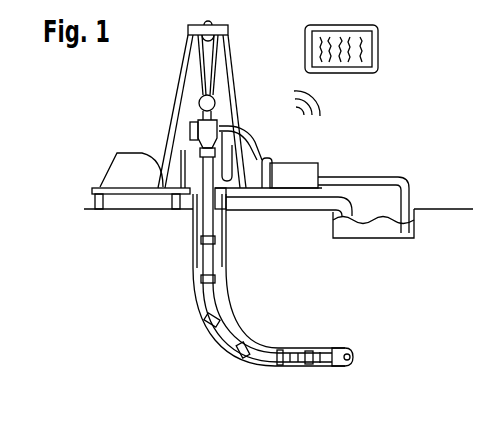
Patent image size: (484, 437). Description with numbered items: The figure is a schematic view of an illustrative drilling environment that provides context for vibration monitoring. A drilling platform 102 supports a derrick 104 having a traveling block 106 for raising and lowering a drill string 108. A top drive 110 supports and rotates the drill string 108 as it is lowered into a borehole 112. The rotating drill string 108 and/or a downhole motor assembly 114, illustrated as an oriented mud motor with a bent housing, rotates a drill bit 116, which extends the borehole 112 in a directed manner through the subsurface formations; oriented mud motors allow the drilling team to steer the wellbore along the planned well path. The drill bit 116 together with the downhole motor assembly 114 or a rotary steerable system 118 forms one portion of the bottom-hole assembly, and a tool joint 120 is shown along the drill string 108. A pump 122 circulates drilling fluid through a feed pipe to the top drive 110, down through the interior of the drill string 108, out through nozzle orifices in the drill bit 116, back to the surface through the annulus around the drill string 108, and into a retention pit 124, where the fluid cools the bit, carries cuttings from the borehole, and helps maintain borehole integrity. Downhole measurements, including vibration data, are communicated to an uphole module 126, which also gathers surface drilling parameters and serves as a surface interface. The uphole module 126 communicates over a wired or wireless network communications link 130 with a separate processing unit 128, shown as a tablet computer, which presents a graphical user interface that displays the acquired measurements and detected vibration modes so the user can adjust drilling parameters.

The drilling platform 102 is at (91, 194).
The derrick 104 is at (187, 47).
The traveling block 106 is at (199, 101).
The drill string 108 is at (206, 272).
The top drive 110 is at (200, 124).
The borehole 112 is at (197, 304).
The downhole motor assembly 114 is at (286, 361).
The drill bit 116 is at (345, 349).
The rotary steerable system 118 is at (309, 365).
The tool joint / coupling 120 is at (280, 349).
The pump 122 is at (319, 171).
The retention pit 124 is at (333, 226).
The uphole module 126 is at (269, 160).
The processing unit 128 is at (305, 43).
The network communications link 130 is at (321, 106).